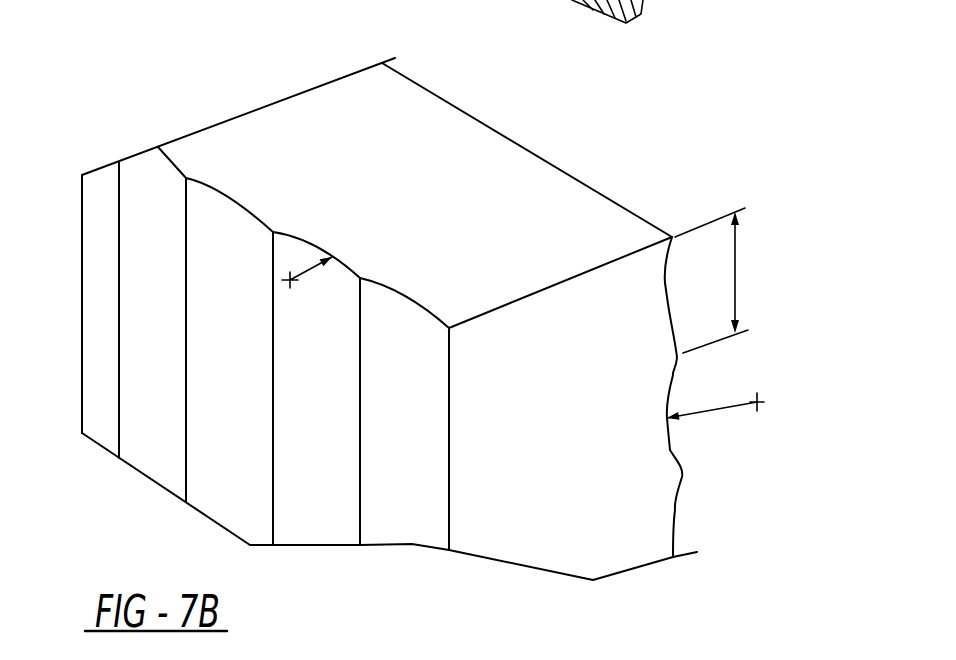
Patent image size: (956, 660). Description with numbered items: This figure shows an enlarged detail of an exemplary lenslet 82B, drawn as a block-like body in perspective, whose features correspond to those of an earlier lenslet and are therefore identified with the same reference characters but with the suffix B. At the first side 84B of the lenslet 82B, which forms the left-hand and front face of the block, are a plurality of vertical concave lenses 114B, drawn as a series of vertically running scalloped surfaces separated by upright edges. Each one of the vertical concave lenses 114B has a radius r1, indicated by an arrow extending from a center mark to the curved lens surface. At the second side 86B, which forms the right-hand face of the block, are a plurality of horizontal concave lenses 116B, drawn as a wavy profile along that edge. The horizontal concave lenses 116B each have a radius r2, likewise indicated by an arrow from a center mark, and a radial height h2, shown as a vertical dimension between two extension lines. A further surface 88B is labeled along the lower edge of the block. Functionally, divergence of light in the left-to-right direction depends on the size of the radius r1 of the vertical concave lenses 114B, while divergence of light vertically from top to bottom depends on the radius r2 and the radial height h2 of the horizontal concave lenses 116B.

The lenslet 82B is at (317, 123).
The vertical concave lenses 114B is at (160, 196).
The horizontal concave lenses 116B is at (667, 293).
The second side 86B is at (673, 377).
The first side 84B is at (162, 405).
The bottom surface 88B is at (527, 493).
The radial height h2 is at (728, 282).
The radius r1 is at (310, 263).
The radius r2 is at (714, 412).